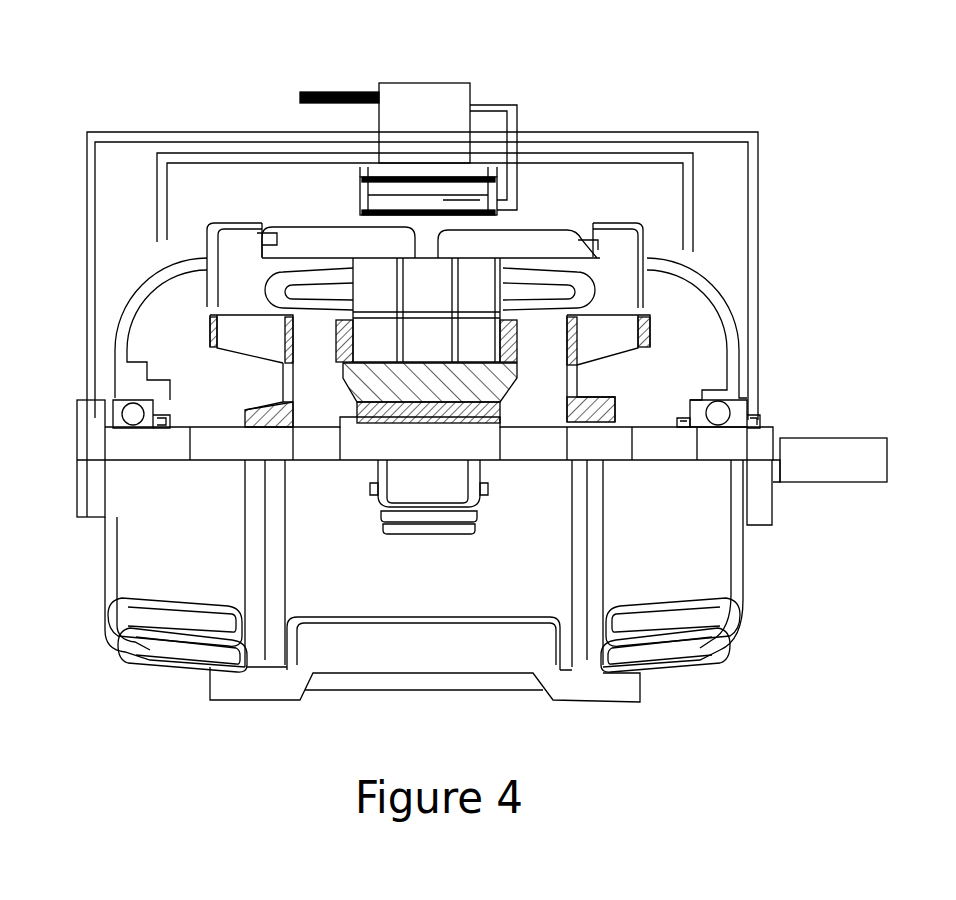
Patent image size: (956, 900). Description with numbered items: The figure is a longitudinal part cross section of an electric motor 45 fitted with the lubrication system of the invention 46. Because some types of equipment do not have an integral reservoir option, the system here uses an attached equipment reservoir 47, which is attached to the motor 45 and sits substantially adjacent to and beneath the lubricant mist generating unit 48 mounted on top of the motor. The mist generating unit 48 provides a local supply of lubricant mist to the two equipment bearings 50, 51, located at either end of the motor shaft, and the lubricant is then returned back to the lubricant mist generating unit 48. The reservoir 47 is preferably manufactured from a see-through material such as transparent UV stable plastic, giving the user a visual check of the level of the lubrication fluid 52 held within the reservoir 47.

The electric motor 45 is at (618, 225).
The lubrication system 46 is at (452, 86).
The reservoir 47 is at (363, 203).
The lubricant mist generating unit 48 is at (406, 82).
The equipment bearing 50 is at (720, 407).
The equipment bearing 51 is at (130, 400).
The lubrication fluid 52 is at (497, 197).